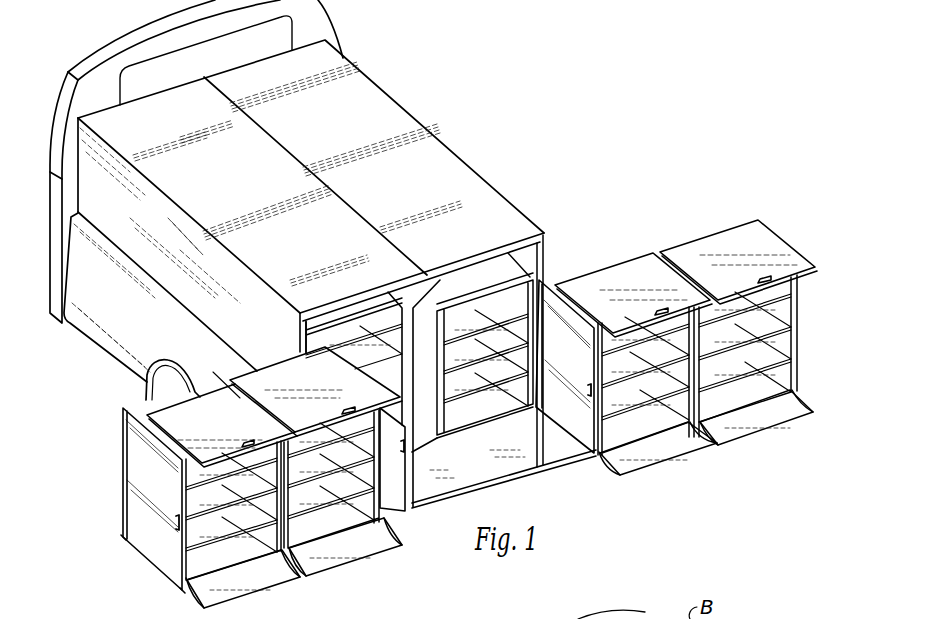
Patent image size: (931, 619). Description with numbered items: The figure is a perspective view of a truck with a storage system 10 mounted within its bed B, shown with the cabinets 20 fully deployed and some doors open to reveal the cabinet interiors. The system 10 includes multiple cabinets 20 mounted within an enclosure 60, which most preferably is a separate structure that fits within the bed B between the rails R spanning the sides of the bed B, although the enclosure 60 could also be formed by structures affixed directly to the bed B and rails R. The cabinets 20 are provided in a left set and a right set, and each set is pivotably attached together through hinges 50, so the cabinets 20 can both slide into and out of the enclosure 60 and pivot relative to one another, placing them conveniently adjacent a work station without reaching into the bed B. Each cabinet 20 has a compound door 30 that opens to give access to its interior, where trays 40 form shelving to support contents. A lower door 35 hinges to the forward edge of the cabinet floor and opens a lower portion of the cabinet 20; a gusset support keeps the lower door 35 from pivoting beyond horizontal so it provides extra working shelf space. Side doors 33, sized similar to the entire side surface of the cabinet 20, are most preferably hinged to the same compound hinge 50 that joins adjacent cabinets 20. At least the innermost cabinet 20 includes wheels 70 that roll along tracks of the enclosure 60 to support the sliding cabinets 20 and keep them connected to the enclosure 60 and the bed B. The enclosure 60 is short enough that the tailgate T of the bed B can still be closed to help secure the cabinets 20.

The storage system 10 is at (560, 183).
The cabinet 20 is at (125, 413).
The compound door 30 is at (147, 410).
The side door 33 is at (165, 503).
The lower door 35 is at (256, 584).
The tray 40 is at (203, 531).
The hinge 50 is at (224, 390).
The enclosure 60 is at (143, 231).
The wheel 70 is at (127, 546).
The bed B is at (403, 94).
The rail R is at (114, 315).
The tailgate T is at (478, 473).